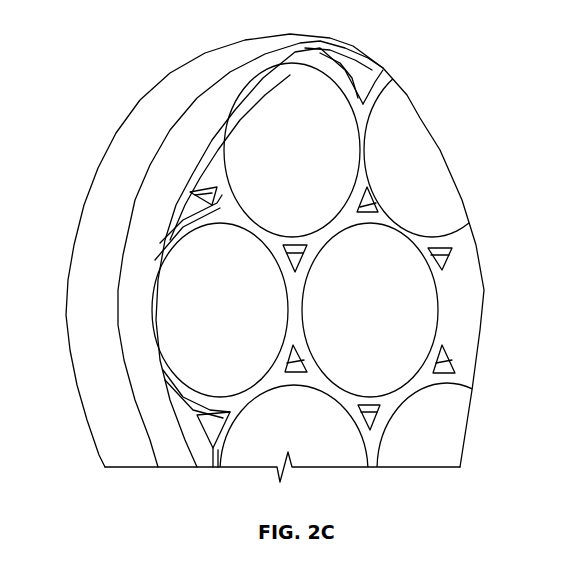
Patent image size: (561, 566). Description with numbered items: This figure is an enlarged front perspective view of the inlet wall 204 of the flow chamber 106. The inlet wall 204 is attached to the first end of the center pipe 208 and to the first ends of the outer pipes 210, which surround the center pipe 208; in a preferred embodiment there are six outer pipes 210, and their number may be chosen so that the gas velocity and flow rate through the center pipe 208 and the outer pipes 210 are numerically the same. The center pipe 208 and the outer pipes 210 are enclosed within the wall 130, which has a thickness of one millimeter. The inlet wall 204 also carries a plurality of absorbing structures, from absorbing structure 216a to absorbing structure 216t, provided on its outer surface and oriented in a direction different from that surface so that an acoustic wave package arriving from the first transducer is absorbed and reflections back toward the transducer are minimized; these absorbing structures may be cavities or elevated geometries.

The flow chamber 106 is at (71, 28).
The wall 130 is at (87, 247).
The inlet wall 204 is at (374, 98).
The center pipe 208 is at (388, 318).
The outer pipe 210 is at (304, 160).
The absorbing structure 216a is at (365, 210).
The absorbing structure 216t is at (373, 407).